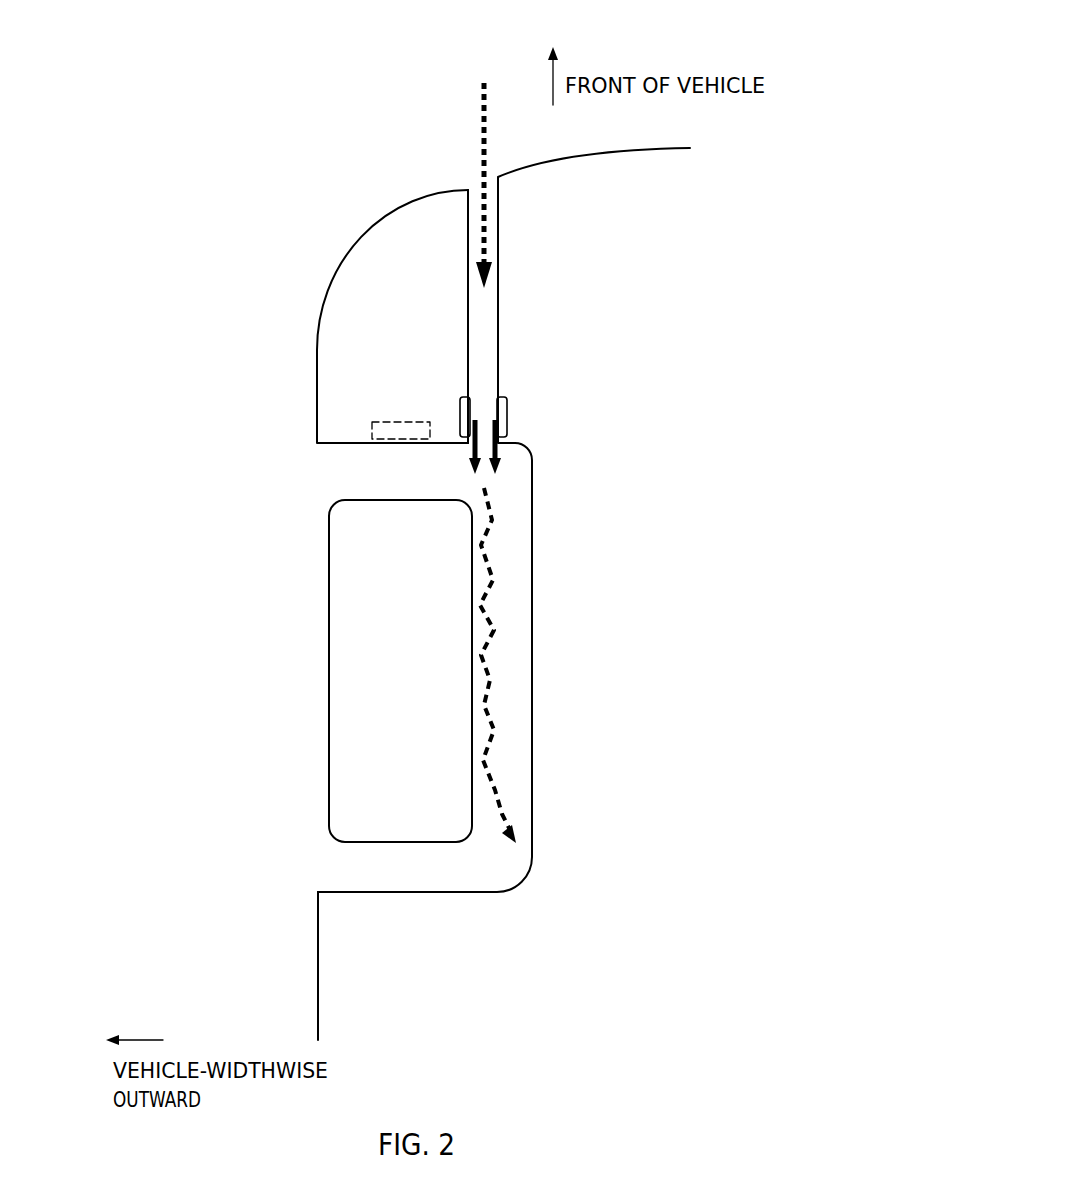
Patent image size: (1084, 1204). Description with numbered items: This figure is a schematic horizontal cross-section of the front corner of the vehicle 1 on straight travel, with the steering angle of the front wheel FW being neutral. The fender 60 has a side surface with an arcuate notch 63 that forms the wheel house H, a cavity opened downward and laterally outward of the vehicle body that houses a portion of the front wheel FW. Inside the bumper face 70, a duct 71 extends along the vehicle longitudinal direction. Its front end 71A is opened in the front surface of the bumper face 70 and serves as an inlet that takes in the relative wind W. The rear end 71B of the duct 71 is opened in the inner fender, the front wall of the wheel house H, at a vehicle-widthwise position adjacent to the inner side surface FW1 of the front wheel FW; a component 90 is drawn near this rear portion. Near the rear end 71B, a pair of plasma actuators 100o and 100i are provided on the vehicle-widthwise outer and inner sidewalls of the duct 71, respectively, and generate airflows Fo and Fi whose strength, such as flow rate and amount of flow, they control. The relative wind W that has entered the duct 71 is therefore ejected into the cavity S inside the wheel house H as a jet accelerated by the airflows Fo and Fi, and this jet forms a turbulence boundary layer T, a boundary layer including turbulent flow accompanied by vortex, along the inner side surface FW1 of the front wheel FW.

The vehicle 1 is at (310, 172).
The bumper face 70 is at (343, 265).
The duct 71 is at (468, 345).
The front end 71A is at (471, 186).
The rear end 71B is at (461, 448).
The fender protector / bracket 90 is at (373, 428).
The plasma actuator 100o is at (467, 398).
The plasma actuator 100i is at (505, 418).
The wheel house H is at (532, 602).
The fender 60 is at (318, 937).
The arcuate notch 63 is at (311, 856).
The front wheel FW is at (330, 560).
The inner side surface FW1 is at (470, 667).
The relative wind W is at (467, 182).
The airflow Fo is at (458, 448).
The airflow Fi is at (505, 448).
The cavity S is at (509, 529).
The turbulence boundary layer T is at (494, 684).